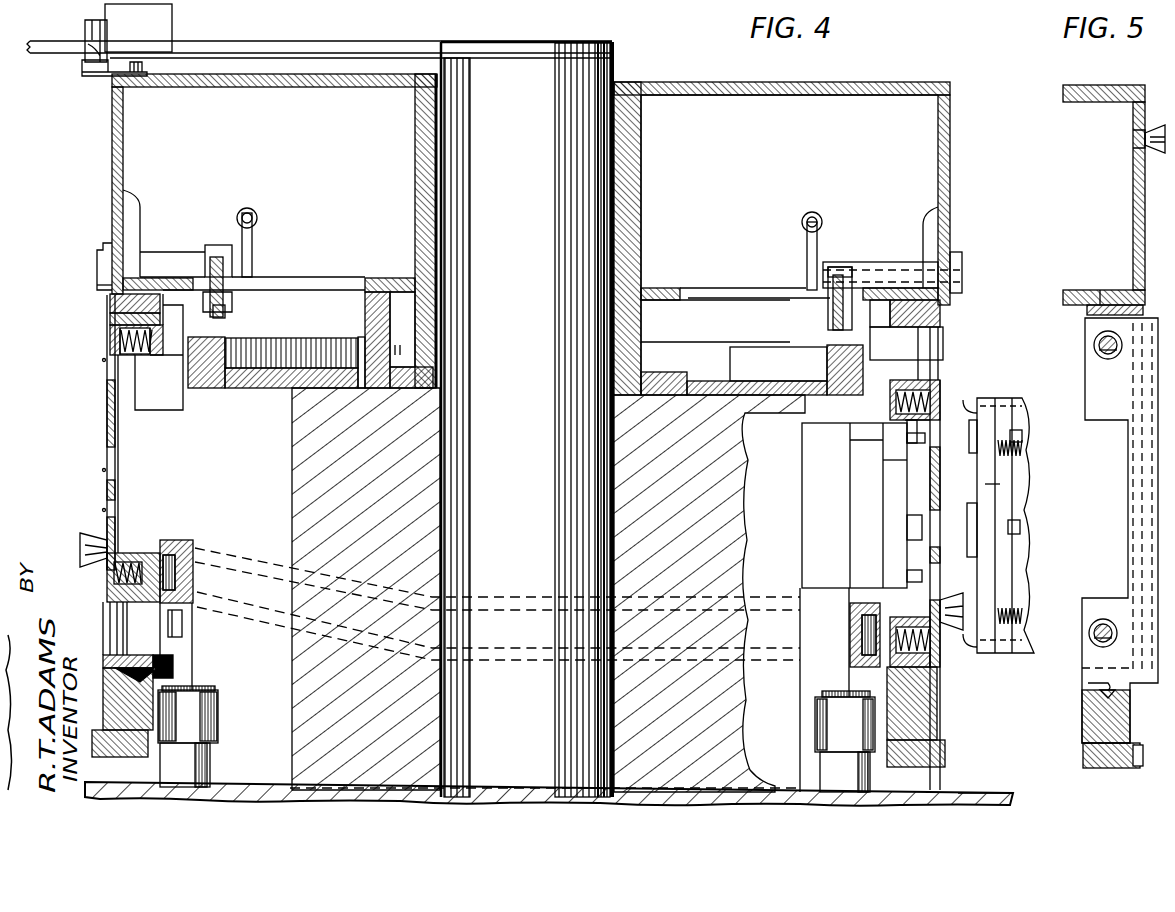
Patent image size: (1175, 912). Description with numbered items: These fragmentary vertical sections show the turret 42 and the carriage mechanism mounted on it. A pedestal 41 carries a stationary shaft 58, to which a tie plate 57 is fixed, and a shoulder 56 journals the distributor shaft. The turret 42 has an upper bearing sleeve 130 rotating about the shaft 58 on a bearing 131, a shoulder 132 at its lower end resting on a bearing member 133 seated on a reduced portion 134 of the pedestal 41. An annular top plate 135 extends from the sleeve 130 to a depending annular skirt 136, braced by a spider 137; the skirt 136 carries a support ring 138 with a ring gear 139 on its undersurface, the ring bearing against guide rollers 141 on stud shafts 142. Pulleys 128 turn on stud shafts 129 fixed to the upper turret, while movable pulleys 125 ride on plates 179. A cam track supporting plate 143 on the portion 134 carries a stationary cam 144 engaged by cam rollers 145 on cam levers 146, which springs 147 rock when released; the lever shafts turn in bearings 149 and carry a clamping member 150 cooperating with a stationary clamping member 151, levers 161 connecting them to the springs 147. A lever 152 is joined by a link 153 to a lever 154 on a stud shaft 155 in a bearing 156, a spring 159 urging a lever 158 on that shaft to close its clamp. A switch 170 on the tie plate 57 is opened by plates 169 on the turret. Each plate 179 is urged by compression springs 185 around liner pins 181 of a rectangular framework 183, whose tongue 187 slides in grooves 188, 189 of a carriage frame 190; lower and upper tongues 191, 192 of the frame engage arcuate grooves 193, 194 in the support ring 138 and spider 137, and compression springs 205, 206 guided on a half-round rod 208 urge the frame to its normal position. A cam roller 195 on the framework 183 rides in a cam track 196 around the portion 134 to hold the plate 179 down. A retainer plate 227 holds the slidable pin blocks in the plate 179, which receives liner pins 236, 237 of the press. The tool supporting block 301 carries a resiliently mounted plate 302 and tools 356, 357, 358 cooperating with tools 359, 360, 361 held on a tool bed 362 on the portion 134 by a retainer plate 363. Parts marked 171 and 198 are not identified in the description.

In FIG. 4, the pedestal 41 is at (300, 792).
In FIG. 4, the turret 42 is at (686, 62).
In FIG. 5, the turret 42 is at (1089, 79).
In FIG. 4, the shoulder 56 is at (958, 800).
In FIG. 4, the tie plate 57 is at (296, 44).
In FIG. 4, the stationary shaft 58 is at (520, 86).
In FIG. 4, the pulleys 125 is at (100, 540).
In FIG. 5, the pulleys 128 is at (1150, 150).
In FIG. 5, the stud shafts 129 is at (1140, 140).
In FIG. 4, the upper bearing sleeve 130 is at (643, 160).
In FIG. 4, the bearing 131 is at (632, 188).
In FIG. 4, the shoulder 132 is at (657, 372).
In FIG. 4, the bearing member 133 is at (700, 380).
In FIG. 4, the reduced portion 134 is at (300, 441).
In FIG. 4, the top plate 135 is at (768, 92).
In FIG. 4, the annular skirt 136 is at (950, 130).
In FIG. 5, the annular skirt 136 is at (1133, 200).
In FIG. 4, the spider 137 is at (660, 286).
In FIG. 5, the spider 137 is at (1070, 295).
In FIG. 4, the support ring 138 is at (103, 693).
In FIG. 4, the ring gear 139 is at (106, 750).
In FIG. 5, the ring gear 139 is at (1122, 768).
In FIG. 4, the guide rollers 141 is at (214, 717).
In FIG. 4, the stud shafts 142 is at (205, 756).
In FIG. 4, the cam track supporting plate 143 is at (263, 376).
In FIG. 4, the stationary cam 144 is at (215, 352).
In FIG. 4, the cam rollers 145 is at (225, 316).
In FIG. 4, the cam levers 146 is at (232, 300).
In FIG. 4, the springs 147 is at (258, 214).
In FIG. 4, the bearings 149 is at (155, 253).
In FIG. 4, the clamping member 150 is at (103, 243).
In FIG. 4, the stationary clamping member 151 is at (100, 286).
In FIG. 4, the lever 152 is at (220, 252).
In FIG. 4, the link 153 is at (212, 265).
In FIG. 4, the lever 154 is at (826, 311).
In FIG. 4, the stud shaft 155 is at (866, 265).
In FIG. 4, the bearing 156 is at (870, 262).
In FIG. 4, the lever 158 is at (806, 236).
In FIG. 4, the spring 159 is at (805, 217).
In FIG. 4, the levers 161 is at (253, 237).
In FIG. 4, the plates 169 is at (107, 74).
In FIG. 4, the switch 170 is at (172, 14).
In FIG. 4, the bracket 171 is at (88, 42).
In FIG. 4, the plates 179 is at (118, 340).
In FIG. 4, the liner pins 181 is at (135, 362).
In FIG. 4, the rectangular framework 183 is at (110, 328).
In FIG. 4, the compression springs 185 is at (133, 352).
In FIG. 5, the tongue 187 is at (1135, 472).
In FIG. 4, the groove 188 is at (940, 340).
In FIG. 4, the groove 189 is at (115, 622).
In FIG. 4, the carriage frame 190 is at (107, 600).
In FIG. 5, the carriage frame 190 is at (1118, 410).
In FIG. 4, the lower tongue 191 is at (175, 663).
In FIG. 5, the lower tongue 191 is at (1090, 684).
In FIG. 4, the upper tongue 192 is at (110, 320).
In FIG. 5, the upper tongue 192 is at (1115, 297).
In FIG. 4, the groove 193 is at (140, 677).
In FIG. 5, the groove 193 is at (1095, 693).
In FIG. 4, the groove 194 is at (110, 298).
In FIG. 5, the groove 194 is at (1090, 310).
In FIG. 4, the cam roller 195 is at (195, 565).
In FIG. 4, the cam track 196 is at (178, 545).
In FIG. 5, the block 198 is at (1085, 720).
In FIG. 5, the compression spring 205 is at (1095, 351).
In FIG. 5, the compression spring 206 is at (1090, 650).
In FIG. 5, the half-round rod 208 is at (1094, 342).
In FIG. 4, the retainer plate 227 is at (118, 417).
In FIG. 4, the liner pin 236 is at (966, 645).
In FIG. 4, the liner pin 237 is at (1012, 398).
In FIG. 4, the tool supporting block 301 is at (1016, 471).
In FIG. 4, the plate 302 is at (990, 485).
In FIG. 4, the set of tools 356 is at (1012, 436).
In FIG. 4, the set of tools 357 is at (1005, 531).
In FIG. 4, the set of tools 358 is at (1000, 566).
In FIG. 4, the set of tools 359 is at (899, 440).
In FIG. 4, the set of tools 360 is at (899, 531).
In FIG. 4, the set of tools 361 is at (905, 572).
In FIG. 4, the tool bed 362 is at (866, 456).
In FIG. 4, the retainer plate 363 is at (895, 466).